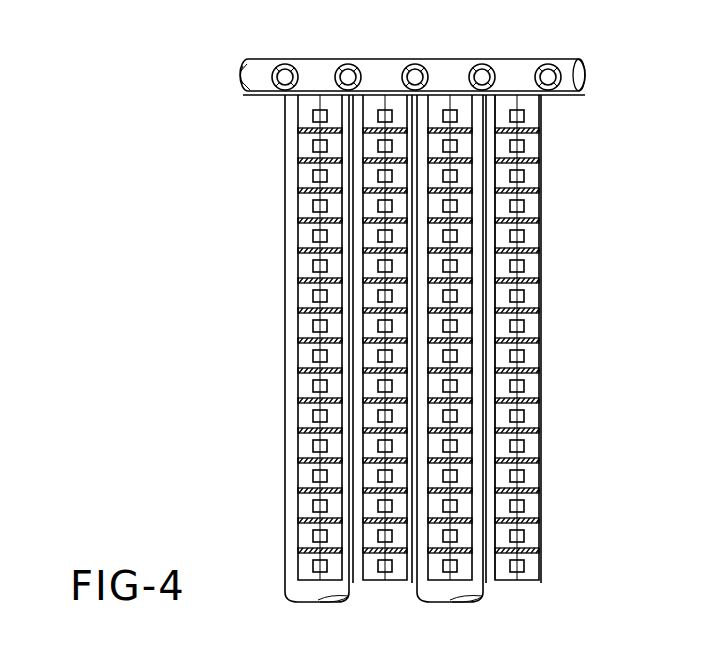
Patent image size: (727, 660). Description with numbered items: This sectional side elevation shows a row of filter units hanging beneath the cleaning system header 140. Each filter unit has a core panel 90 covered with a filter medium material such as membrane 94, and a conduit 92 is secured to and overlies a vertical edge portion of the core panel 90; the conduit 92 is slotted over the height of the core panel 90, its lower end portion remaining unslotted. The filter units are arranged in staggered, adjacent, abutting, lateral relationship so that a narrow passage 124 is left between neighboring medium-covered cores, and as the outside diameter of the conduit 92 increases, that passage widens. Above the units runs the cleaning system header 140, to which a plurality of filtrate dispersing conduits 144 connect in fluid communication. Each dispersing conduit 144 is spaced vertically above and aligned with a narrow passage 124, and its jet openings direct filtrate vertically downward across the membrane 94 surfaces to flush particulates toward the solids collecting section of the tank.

The cleaning system header 140 is at (377, 59).
The filtrate dispersing conduit 144 is at (463, 38).
The conduit 92 is at (285, 205).
The core panel 90 is at (530, 243).
The membrane 94 is at (542, 270).
The narrow passage 124 is at (363, 410).